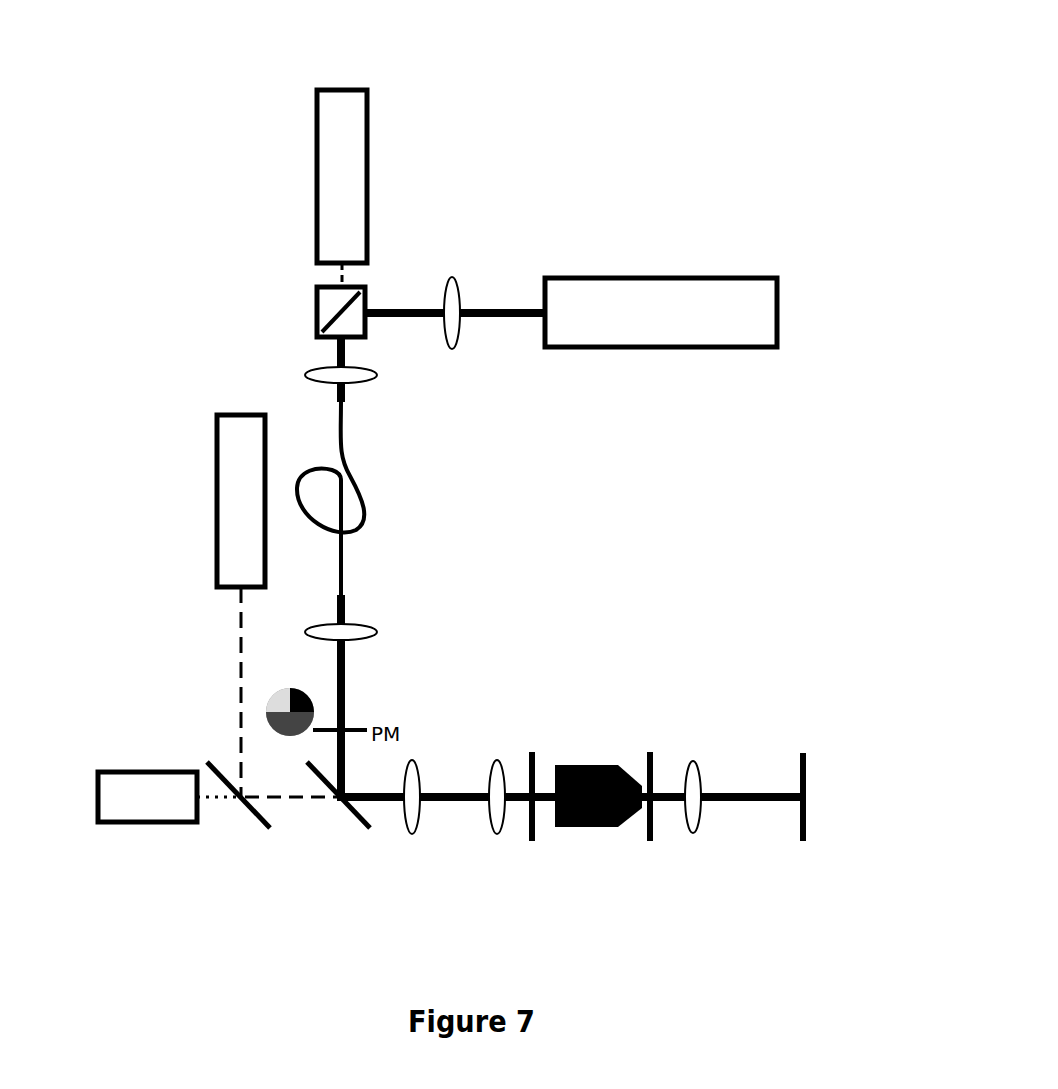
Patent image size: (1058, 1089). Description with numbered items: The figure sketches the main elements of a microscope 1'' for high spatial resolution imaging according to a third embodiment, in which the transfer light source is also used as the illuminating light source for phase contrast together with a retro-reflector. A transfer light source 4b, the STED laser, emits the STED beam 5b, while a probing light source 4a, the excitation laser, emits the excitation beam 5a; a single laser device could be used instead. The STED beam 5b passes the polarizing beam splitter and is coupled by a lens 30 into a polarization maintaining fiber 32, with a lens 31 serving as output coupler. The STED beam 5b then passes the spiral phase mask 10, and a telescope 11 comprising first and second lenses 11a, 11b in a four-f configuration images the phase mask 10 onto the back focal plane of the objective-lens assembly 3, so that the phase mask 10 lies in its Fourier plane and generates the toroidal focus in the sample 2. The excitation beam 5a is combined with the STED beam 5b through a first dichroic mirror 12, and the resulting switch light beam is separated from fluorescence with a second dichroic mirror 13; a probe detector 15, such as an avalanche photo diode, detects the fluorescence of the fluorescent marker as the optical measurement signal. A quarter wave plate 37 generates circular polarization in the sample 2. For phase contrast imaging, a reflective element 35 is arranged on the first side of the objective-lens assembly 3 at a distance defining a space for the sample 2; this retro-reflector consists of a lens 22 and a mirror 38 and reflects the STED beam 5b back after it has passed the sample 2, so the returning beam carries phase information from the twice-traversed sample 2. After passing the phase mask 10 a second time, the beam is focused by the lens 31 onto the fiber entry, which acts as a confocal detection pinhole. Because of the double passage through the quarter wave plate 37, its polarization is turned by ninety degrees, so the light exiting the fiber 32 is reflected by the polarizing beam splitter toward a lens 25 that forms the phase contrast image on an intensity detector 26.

The microscope 1'' is at (539, 419).
The transfer light source 4b is at (368, 176).
The STED beam 5b is at (344, 272).
The lens 25 is at (459, 294).
The intensity detector 26 is at (698, 278).
The lens 30 is at (310, 377).
The polarization maintaining fiber 32 is at (357, 484).
The lens 31 is at (362, 627).
The probing light source 4a is at (217, 540).
The excitation beam 5a is at (234, 638).
The phase mask 10 is at (263, 712).
The probe detector 15 is at (125, 822).
The first dichroic mirror 12 is at (251, 812).
The second dichroic mirror 13 is at (355, 822).
The telescope 11 is at (454, 808).
The first lens 11a is at (416, 780).
The second lens 11b is at (493, 777).
The quarter wave plate 37 is at (534, 752).
The objective-lens assembly 3 is at (566, 767).
The sample 2 is at (649, 754).
The reflective element 35 is at (779, 711).
The lens 22 is at (703, 768).
The mirror 38 is at (810, 767).